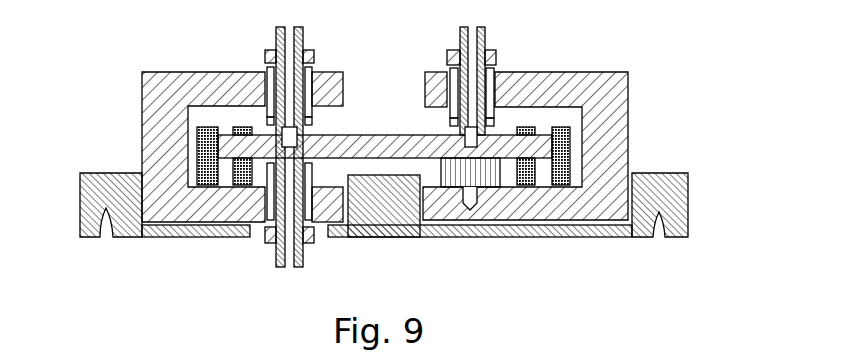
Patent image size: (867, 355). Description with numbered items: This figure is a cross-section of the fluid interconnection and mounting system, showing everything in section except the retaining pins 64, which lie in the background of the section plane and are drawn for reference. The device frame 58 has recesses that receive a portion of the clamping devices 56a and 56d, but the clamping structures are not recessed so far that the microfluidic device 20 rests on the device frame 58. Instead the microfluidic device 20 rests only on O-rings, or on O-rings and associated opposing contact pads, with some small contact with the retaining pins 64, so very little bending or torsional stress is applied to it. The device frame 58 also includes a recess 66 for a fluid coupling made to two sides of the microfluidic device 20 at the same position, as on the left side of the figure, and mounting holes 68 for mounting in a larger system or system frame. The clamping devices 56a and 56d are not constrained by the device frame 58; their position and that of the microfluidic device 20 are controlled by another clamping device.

The microfluidic device 20 is at (378, 147).
The clamping device 56a is at (608, 117).
The clamping device 56d is at (152, 143).
The device frame 58 is at (93, 196).
The retaining pins 64 is at (242, 128).
The recess 66 is at (259, 254).
The mounting holes 68 is at (110, 217).